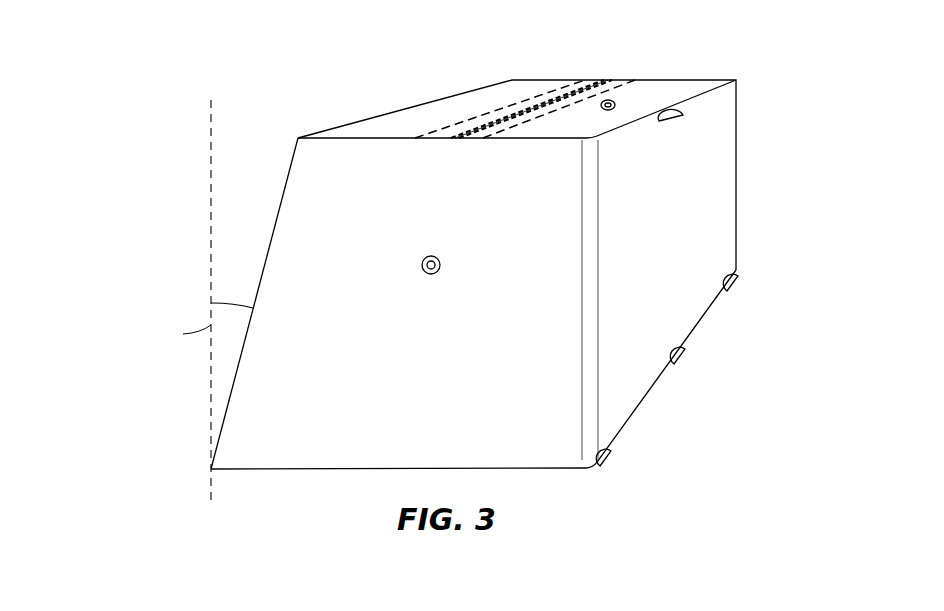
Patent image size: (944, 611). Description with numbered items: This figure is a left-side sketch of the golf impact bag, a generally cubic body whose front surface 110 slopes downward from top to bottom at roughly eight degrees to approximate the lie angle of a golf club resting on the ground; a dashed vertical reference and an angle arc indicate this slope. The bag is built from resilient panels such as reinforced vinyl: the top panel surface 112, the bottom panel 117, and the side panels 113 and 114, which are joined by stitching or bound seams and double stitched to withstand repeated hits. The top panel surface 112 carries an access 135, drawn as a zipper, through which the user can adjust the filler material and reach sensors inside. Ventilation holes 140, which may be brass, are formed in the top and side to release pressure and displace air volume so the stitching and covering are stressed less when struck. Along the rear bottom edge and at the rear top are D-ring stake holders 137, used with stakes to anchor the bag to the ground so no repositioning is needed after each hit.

The front surface 110 is at (253, 247).
The top panel surface 112 is at (402, 124).
The side panel 113 is at (427, 396).
The side panel 114 is at (684, 227).
The bottom panel 117 is at (323, 548).
The access 135 is at (507, 112).
The stake holders 137 is at (684, 120).
The ventilation holes 140 is at (615, 103).